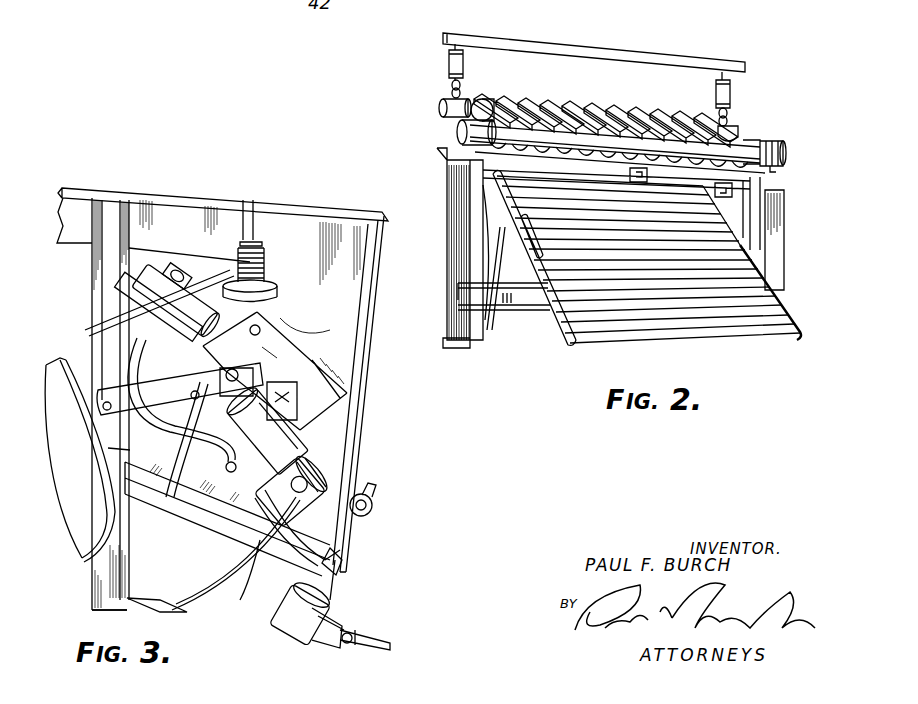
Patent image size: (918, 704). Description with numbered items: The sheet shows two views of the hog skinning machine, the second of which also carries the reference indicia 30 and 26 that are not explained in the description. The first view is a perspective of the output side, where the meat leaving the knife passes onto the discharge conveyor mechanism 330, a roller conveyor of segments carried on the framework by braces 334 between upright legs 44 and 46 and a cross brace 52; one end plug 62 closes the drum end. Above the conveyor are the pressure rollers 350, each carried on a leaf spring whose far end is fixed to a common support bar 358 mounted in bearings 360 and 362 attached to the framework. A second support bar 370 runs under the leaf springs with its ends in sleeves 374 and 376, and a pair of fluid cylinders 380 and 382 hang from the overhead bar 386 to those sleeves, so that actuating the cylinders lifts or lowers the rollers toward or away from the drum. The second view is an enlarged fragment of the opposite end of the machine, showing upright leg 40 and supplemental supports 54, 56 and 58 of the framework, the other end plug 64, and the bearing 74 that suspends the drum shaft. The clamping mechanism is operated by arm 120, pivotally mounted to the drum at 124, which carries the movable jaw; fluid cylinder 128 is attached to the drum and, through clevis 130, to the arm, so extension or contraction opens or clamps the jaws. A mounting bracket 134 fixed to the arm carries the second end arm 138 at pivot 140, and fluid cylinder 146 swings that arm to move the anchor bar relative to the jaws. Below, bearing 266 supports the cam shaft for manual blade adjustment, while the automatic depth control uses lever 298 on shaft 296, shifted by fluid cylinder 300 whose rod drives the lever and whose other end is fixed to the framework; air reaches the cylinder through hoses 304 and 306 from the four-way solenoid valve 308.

In FIG. 2, the overhead bar 386 is at (618, 52).
In FIG. 2, the fluid cylinder 380 is at (465, 64).
In FIG. 2, the sleeve 374 is at (440, 107).
In FIG. 2, the second support bar 370 is at (478, 102).
In FIG. 2, the bearing 362 is at (458, 130).
In FIG. 2, the rollers 350 is at (572, 125).
In FIG. 2, the common support bar 358 is at (742, 146).
In FIG. 2, the bearing 360 is at (772, 155).
In FIG. 2, the fluid cylinder 382 is at (716, 95).
In FIG. 2, the rake assembly 30 is at (742, 80).
In FIG. 2, the sleeve 376 is at (738, 136).
In FIG. 2, the upright leg 44 is at (462, 280).
In FIG. 2, the braces 334 is at (522, 228).
In FIG. 2, the end plug 62 is at (482, 268).
In FIG. 2, the cross brace 52 is at (466, 300).
In FIG. 2, the discharge conveyor mechanism 330 is at (690, 185).
In FIG. 2, the upright leg 46 is at (778, 203).
In FIG. 3, the supplemental support 56 is at (148, 212).
In FIG. 3, the supplemental support 54 is at (103, 218).
In FIG. 3, the upright leg 40 is at (345, 455).
In FIG. 3, the spring 26 is at (242, 326).
In FIG. 3, the mounting bracket 134 is at (140, 278).
In FIG. 3, the fluid cylinder 146 is at (178, 290).
In FIG. 3, the clevis 130 is at (283, 326).
In FIG. 3, the pivot 140 is at (157, 328).
In FIG. 3, the arm 120 is at (128, 362).
In FIG. 3, the pivotal mount 124 is at (100, 393).
In FIG. 3, the bearing 74 is at (85, 503).
In FIG. 3, the supplemental support 58 is at (73, 593).
In FIG. 3, the end plug 64 is at (177, 577).
In FIG. 3, the fluid cylinder 128 is at (250, 438).
In FIG. 3, the lever 298 is at (330, 515).
In FIG. 3, the shaft 296 is at (263, 552).
In FIG. 3, the bearing 266 is at (372, 510).
In FIG. 3, the fluid cylinder 300 is at (298, 635).
In FIG. 3, the hose 304 is at (345, 620).
In FIG. 3, the four-way solenoid valve 308 is at (365, 636).
In FIG. 3, the hose 306 is at (350, 650).
In FIG. 3, the second end arm 138 is at (277, 358).